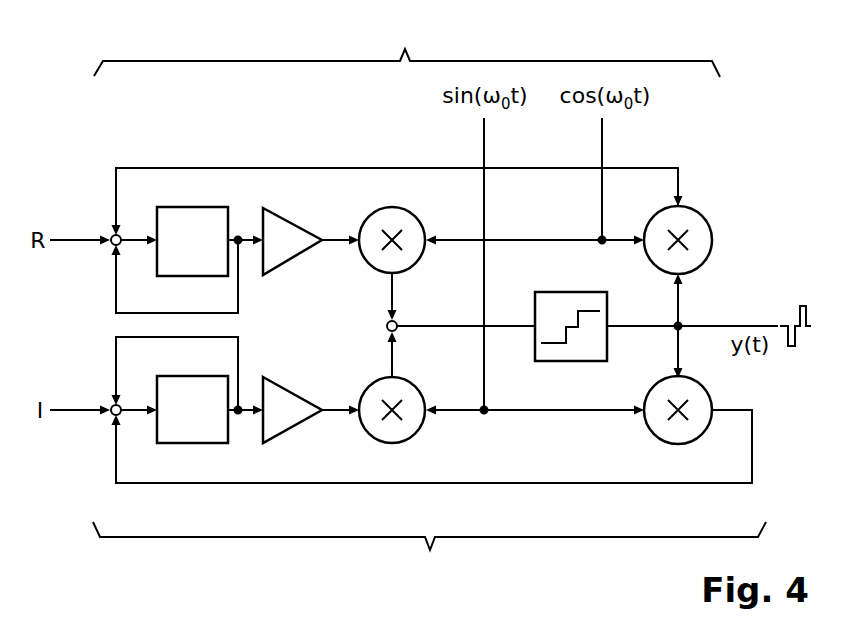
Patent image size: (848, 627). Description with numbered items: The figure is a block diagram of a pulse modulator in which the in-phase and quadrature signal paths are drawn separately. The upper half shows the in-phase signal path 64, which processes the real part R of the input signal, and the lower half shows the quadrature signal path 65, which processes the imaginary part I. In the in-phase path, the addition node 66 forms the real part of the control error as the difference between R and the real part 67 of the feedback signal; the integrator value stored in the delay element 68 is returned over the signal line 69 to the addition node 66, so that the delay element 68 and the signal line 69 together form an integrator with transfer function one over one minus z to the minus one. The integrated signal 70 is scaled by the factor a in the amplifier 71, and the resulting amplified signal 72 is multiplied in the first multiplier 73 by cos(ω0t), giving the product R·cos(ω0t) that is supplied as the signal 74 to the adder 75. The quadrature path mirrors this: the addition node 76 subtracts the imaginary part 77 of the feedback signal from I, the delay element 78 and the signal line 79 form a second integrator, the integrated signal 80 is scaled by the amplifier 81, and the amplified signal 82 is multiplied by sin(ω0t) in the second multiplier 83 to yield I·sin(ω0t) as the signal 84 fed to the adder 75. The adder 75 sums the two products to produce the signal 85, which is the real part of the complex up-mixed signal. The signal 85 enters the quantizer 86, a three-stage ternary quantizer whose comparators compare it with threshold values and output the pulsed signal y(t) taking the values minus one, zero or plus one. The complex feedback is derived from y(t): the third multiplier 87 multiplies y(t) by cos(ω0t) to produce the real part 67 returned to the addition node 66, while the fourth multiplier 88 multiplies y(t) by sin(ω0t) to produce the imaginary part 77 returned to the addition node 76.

The in-phase signal path 64 is at (407, 48).
The quadrature signal path 65 is at (429, 553).
The addition node 66 is at (121, 236).
The real part of the feedback signal 67 is at (116, 188).
The delay element 68 is at (186, 207).
The signal line 69 is at (116, 296).
The integrated signal 70 is at (232, 238).
The amplifier 71 is at (295, 259).
The amplified signal 72 is at (334, 246).
The first multiplier 73 is at (366, 218).
The signal 74 is at (394, 300).
The adder 75 is at (386, 328).
The addition node 76 is at (110, 414).
The imaginary part of the feedback signal 77 is at (116, 462).
The delay element 78 is at (195, 443).
The signal line 79 is at (116, 360).
The integrated signal 80 is at (234, 414).
The amplifier 81 is at (284, 388).
The amplified signal 82 is at (332, 414).
The second multiplier 83 is at (418, 434).
The signal 84 is at (394, 366).
The signal 85 is at (500, 326).
The quantizer 86 is at (607, 310).
The third multiplier 87 is at (705, 260).
The fourth multiplier 88 is at (705, 398).